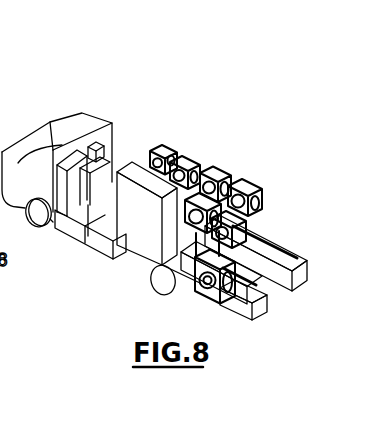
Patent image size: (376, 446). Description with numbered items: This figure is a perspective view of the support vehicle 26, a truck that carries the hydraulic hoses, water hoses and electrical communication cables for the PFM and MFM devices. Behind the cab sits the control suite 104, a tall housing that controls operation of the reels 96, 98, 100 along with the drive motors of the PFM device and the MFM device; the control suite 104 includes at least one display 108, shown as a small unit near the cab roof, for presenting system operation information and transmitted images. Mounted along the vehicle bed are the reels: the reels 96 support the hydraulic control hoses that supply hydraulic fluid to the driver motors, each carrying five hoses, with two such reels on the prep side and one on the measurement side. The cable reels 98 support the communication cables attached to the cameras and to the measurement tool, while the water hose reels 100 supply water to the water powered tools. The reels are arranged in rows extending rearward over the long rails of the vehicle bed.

The support vehicle 26 is at (265, 117).
The reel 96 is at (203, 243).
The cable reel 98 is at (182, 153).
The water hose reel 100 is at (232, 183).
The control suite 104 is at (118, 170).
The display 108 is at (97, 145).